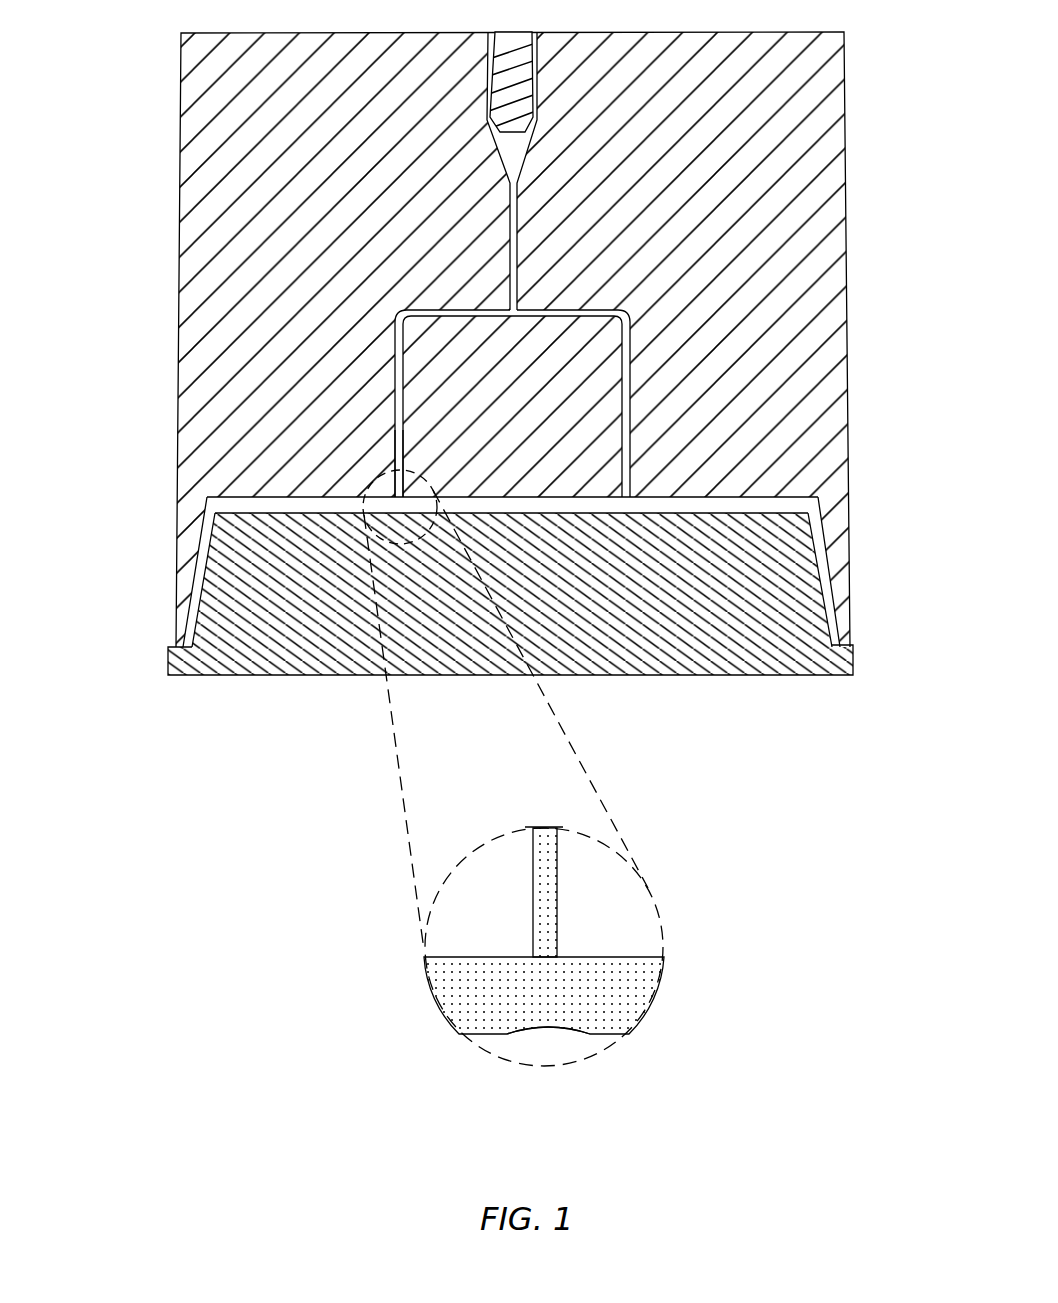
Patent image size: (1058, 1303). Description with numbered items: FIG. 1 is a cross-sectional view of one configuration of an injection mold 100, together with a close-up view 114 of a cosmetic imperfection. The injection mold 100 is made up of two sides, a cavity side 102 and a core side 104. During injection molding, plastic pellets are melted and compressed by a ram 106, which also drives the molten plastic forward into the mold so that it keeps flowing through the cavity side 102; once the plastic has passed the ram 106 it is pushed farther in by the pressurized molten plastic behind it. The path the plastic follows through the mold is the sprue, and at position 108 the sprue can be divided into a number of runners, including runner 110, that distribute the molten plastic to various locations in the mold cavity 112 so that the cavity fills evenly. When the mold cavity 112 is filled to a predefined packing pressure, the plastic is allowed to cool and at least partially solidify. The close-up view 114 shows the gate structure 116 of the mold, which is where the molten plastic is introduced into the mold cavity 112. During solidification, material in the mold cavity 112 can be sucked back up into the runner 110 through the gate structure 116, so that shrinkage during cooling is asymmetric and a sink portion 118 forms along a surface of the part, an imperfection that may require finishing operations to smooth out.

The injection mold 100 is at (122, 56).
The cavity side 102 is at (178, 268).
The core side 104 is at (168, 661).
The ram 106 is at (492, 75).
The position 108 is at (520, 310).
The runner 110 is at (395, 428).
The mold cavity 112 is at (820, 505).
The close-up view 114 is at (517, 768).
The gate structure 116 is at (572, 950).
The sink portion 118 is at (560, 1034).